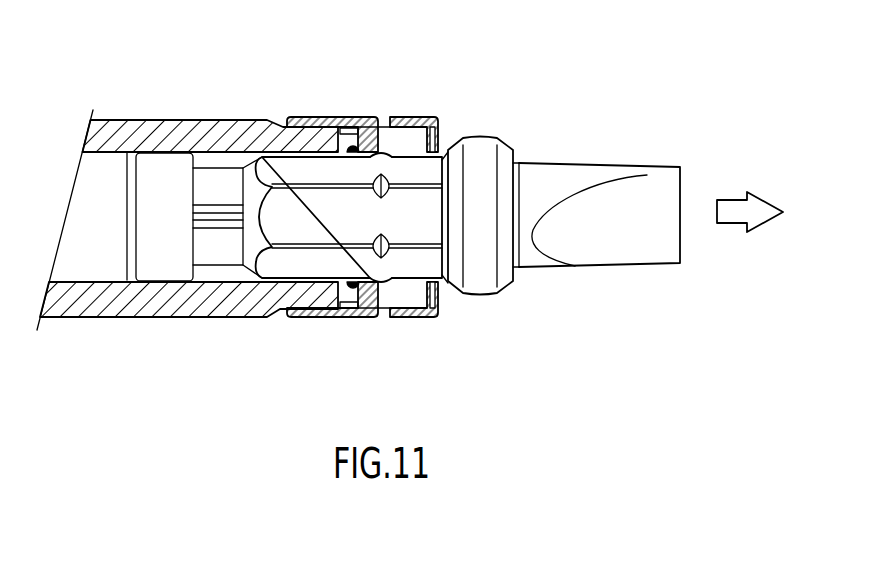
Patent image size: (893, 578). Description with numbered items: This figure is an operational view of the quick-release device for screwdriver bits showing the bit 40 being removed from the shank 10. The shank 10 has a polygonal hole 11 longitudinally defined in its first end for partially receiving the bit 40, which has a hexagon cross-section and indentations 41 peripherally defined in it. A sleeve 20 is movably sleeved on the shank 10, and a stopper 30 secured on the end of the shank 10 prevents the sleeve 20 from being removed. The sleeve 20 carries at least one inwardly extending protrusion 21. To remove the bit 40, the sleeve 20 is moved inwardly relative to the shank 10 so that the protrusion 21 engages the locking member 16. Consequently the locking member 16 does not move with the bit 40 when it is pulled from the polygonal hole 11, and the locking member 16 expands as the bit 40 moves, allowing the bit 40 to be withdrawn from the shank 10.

The shank 10 is at (168, 112).
The polygonal hole 11 is at (222, 255).
The locking member 16 is at (348, 116).
The sleeve 20 is at (320, 325).
The protrusion 21 is at (368, 135).
The stopper 30 is at (433, 116).
The bit 40 is at (540, 145).
The indentation 41 is at (384, 152).